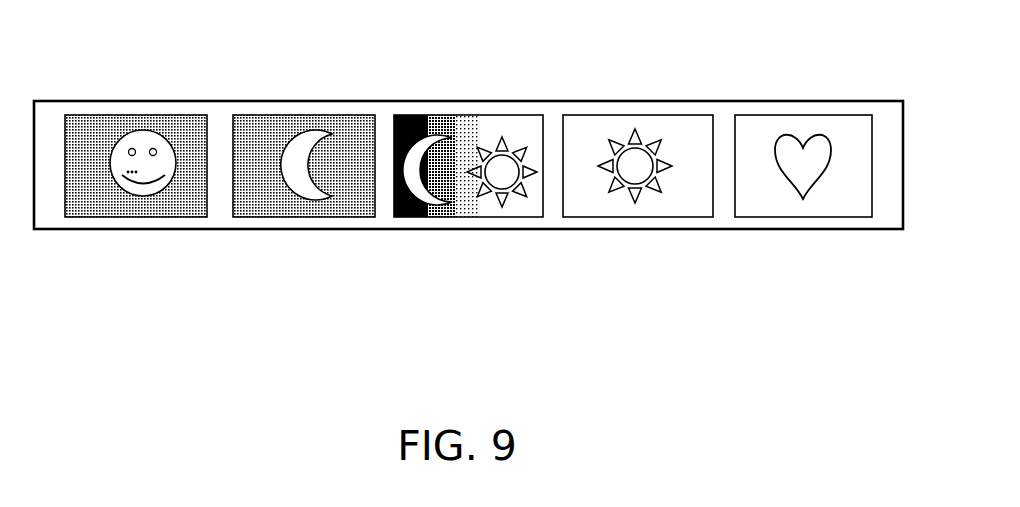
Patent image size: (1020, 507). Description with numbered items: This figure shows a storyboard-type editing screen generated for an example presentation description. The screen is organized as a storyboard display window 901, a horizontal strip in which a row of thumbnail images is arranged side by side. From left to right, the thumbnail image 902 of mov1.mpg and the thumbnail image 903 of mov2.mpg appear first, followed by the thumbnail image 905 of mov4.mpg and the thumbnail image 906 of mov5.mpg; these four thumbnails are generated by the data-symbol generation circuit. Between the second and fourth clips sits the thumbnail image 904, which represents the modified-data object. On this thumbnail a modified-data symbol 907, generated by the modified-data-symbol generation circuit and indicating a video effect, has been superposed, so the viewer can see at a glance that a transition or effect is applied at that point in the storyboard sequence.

The storyboard display window 901 is at (60, 100).
The thumbnail image 902 is at (140, 115).
The thumbnail image 903 is at (310, 115).
The thumbnail image 904 is at (464, 168).
The thumbnail image 905 is at (640, 115).
The thumbnail image 906 is at (800, 115).
The modified-data symbol 907 is at (412, 217).